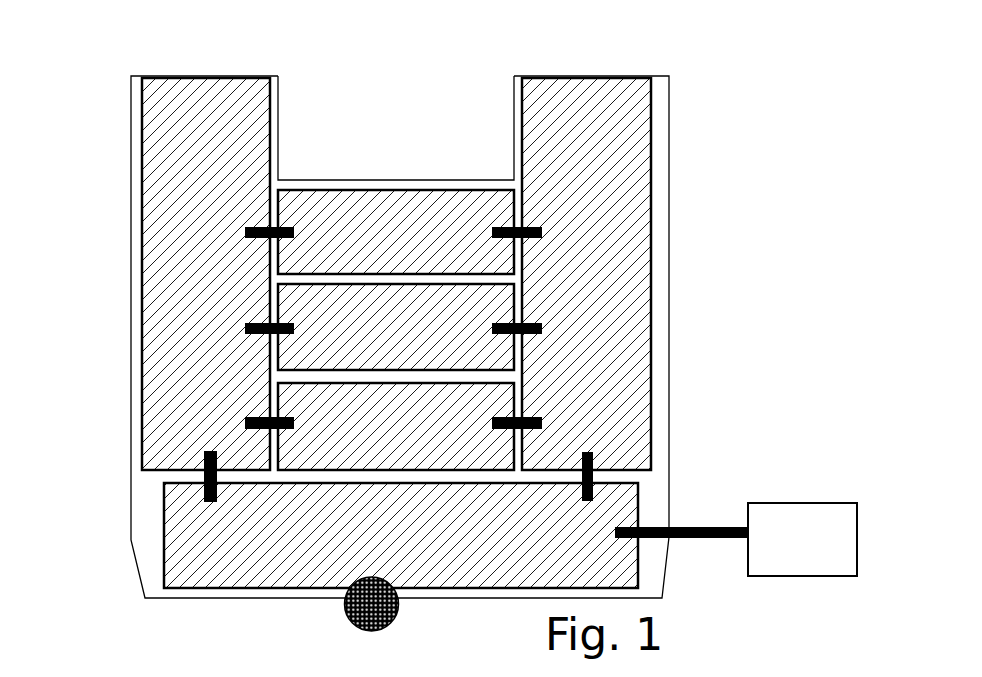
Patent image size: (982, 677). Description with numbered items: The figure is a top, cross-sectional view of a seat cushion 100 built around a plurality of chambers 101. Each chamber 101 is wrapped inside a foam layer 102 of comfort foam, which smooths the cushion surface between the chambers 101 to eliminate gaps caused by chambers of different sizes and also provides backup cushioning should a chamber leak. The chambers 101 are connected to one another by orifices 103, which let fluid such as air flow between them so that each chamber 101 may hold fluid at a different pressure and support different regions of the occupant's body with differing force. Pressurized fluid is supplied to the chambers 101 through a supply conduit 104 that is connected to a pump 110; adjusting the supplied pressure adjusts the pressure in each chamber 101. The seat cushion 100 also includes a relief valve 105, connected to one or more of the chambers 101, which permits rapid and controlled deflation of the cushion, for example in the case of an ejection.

The seat cushion 100 is at (703, 72).
The chamber 101 is at (193, 148).
The foam layer 102 is at (660, 160).
The orifice 103 is at (245, 236).
The supply conduit 104 is at (682, 527).
The relief valve 105 is at (342, 607).
The pump 110 is at (773, 502).